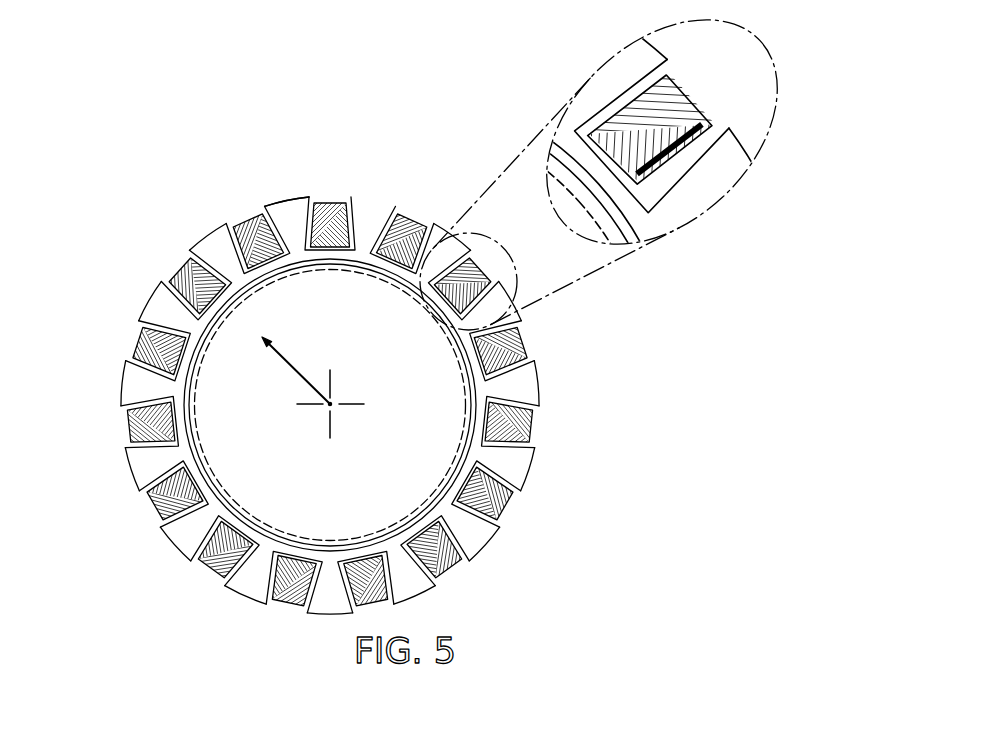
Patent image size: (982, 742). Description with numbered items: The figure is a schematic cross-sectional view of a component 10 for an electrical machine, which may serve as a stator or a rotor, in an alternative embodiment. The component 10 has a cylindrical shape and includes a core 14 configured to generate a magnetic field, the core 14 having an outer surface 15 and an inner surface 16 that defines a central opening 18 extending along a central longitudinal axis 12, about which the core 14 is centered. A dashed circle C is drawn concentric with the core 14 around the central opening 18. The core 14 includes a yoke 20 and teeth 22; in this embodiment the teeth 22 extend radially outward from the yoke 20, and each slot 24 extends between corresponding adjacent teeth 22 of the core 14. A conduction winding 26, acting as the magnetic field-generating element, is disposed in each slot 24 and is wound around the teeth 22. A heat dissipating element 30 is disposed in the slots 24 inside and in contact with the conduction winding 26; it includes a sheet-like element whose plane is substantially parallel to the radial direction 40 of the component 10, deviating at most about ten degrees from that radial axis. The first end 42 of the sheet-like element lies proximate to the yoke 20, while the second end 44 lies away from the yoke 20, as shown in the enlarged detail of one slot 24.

The component 10 is at (407, 371).
The central longitudinal axis 12 is at (357, 398).
The core 14 is at (261, 282).
The outer surface 15 is at (288, 196).
The inner surface 16 is at (245, 280).
The central opening 18 is at (412, 459).
The yoke 20 is at (330, 263).
The teeth 22 is at (208, 515).
The slots 24 is at (470, 568).
The conduction winding 26 is at (518, 495).
The heat dissipating element 30 is at (485, 279).
The radial direction 40 is at (301, 370).
The first end 42 is at (640, 181).
The second end 44 is at (693, 128).
The circle C is at (199, 382).